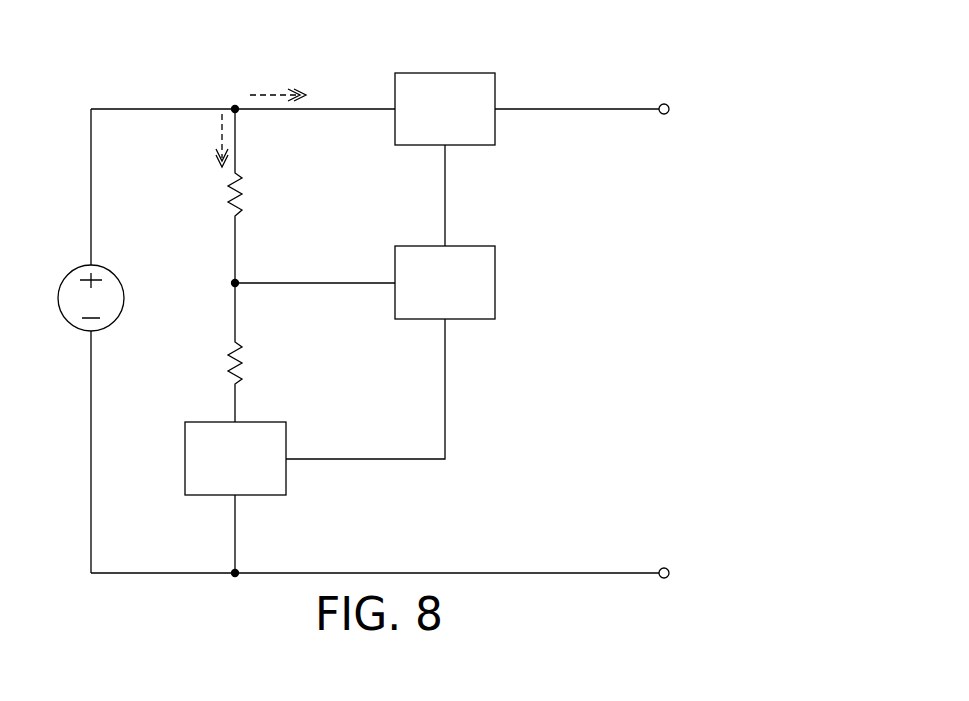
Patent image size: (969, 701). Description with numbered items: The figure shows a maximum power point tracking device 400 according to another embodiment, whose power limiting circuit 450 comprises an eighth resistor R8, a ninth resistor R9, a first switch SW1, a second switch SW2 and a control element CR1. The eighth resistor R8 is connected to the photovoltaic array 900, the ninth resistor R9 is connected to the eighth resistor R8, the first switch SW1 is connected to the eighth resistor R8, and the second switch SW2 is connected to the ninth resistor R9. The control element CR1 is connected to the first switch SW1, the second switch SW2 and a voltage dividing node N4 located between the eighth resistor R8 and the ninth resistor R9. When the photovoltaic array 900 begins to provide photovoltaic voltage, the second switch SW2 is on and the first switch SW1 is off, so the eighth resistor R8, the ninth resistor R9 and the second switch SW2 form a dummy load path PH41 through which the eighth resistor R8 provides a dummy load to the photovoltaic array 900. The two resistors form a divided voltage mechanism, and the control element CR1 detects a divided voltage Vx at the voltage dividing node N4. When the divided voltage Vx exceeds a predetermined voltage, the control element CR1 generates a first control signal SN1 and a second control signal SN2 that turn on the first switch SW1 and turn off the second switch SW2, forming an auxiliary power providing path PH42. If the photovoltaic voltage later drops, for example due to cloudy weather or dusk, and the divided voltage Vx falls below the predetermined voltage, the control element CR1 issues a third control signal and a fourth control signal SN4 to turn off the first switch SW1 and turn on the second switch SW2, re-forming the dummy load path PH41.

The maximum power point tracking device 400 is at (785, 36).
The power limiting circuit 450 is at (356, 63).
The photovoltaic array 900 is at (67, 276).
The dummy load path PH41 is at (219, 141).
The auxiliary power providing path PH42 is at (276, 92).
The eighth resistor R8 is at (217, 196).
The ninth resistor R9 is at (217, 352).
The voltage dividing node N4 is at (214, 284).
The divided voltage Vx is at (315, 270).
The first switch SW1 is at (420, 122).
The second switch SW2 is at (210, 471).
The control element CR1 is at (422, 296).
The first control signal SN1 is at (502, 195).
The second control signal SN2 is at (423, 389).
The fourth control signal SN4 is at (365, 389).